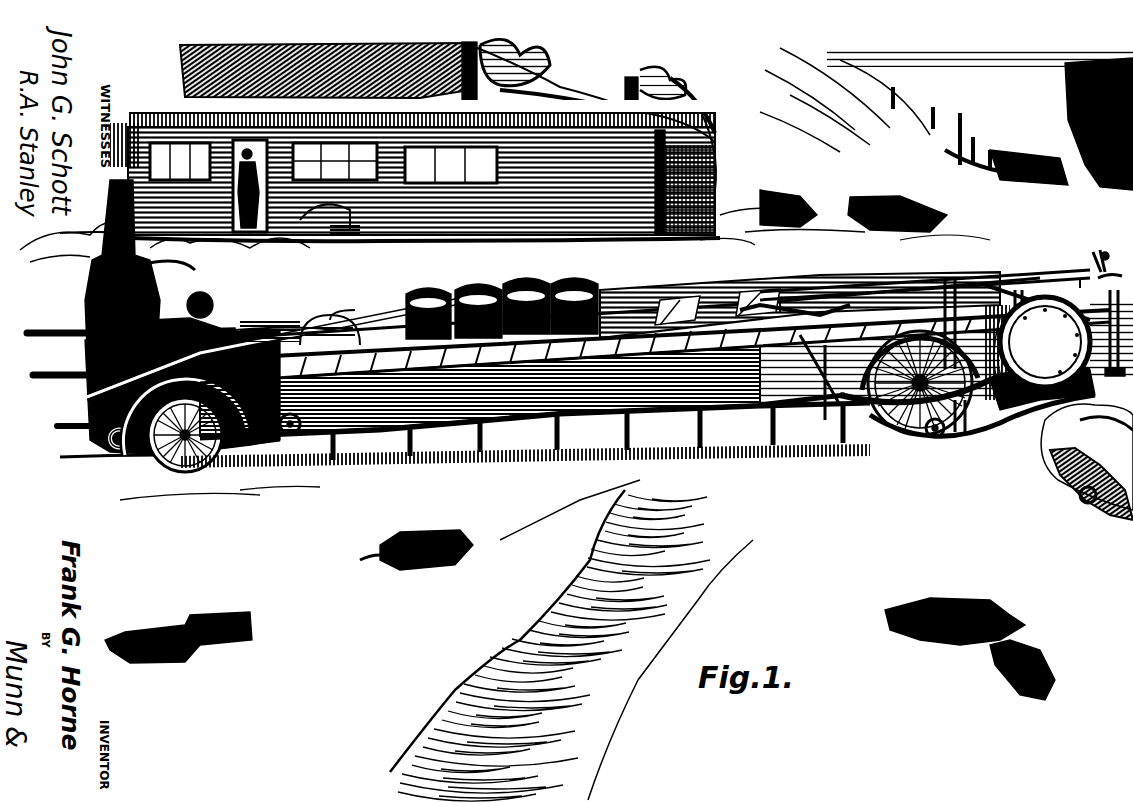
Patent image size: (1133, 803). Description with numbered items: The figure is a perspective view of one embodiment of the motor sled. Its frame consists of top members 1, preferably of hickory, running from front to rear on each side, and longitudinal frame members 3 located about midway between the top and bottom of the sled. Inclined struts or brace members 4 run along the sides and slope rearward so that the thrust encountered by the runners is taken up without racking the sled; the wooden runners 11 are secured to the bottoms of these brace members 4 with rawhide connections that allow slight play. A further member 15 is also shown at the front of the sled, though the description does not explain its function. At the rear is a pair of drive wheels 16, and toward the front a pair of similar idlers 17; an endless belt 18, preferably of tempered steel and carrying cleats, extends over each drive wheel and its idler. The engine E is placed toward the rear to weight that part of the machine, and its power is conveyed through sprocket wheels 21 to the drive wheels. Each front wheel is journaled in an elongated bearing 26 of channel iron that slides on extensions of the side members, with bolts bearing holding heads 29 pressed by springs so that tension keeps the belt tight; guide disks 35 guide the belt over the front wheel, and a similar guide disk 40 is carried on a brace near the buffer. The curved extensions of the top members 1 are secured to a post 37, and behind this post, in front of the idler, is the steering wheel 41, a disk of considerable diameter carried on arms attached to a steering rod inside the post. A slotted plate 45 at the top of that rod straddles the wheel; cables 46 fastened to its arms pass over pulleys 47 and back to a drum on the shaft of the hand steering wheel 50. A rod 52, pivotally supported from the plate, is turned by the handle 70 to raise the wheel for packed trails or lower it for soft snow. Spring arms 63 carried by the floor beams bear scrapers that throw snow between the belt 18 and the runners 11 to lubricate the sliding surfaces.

The top frame member 1 is at (263, 345).
The reference F is at (635, 308).
The longitudinal frame member 3 is at (735, 416).
The strut or brace member 4 is at (703, 442).
The runner 11 is at (810, 448).
The pole 15 is at (69, 426).
The drive wheel 16 is at (125, 463).
The idler 17 is at (905, 427).
The endless belt 18 is at (800, 305).
The sprocket wheel 21 is at (962, 430).
The elongated bearing 26 is at (828, 416).
The holding head 29 is at (695, 314).
The guide disk 35 is at (881, 342).
The post 37 is at (1119, 332).
The guide disk 40 is at (982, 427).
The steering wheel 41 is at (1097, 372).
The plate 45 is at (1057, 286).
The flexible member 46 is at (925, 287).
The pulley 47 is at (990, 304).
The steering wheel 50 is at (278, 316).
The rod 52 is at (1115, 269).
The spring arm 63 is at (930, 432).
The handle 70 is at (1105, 255).